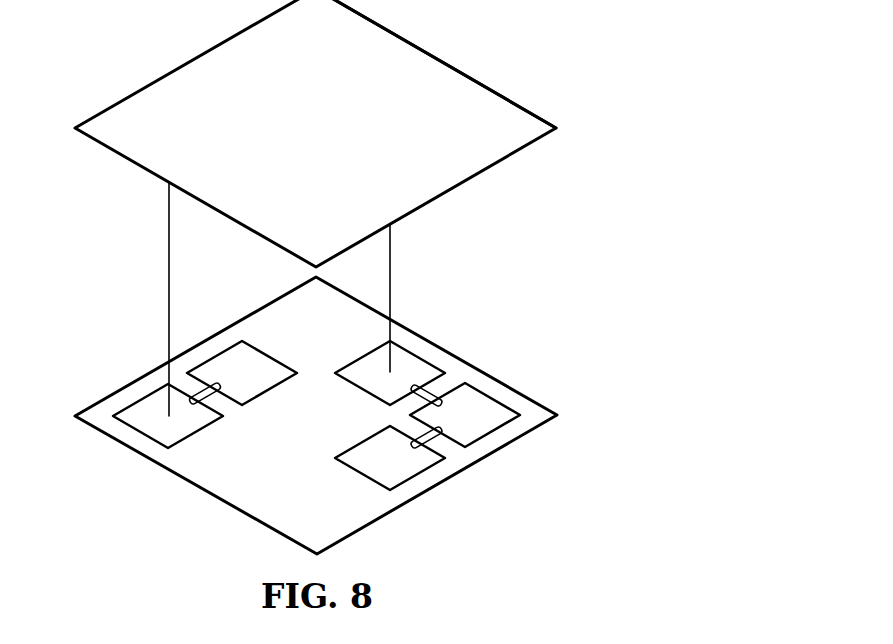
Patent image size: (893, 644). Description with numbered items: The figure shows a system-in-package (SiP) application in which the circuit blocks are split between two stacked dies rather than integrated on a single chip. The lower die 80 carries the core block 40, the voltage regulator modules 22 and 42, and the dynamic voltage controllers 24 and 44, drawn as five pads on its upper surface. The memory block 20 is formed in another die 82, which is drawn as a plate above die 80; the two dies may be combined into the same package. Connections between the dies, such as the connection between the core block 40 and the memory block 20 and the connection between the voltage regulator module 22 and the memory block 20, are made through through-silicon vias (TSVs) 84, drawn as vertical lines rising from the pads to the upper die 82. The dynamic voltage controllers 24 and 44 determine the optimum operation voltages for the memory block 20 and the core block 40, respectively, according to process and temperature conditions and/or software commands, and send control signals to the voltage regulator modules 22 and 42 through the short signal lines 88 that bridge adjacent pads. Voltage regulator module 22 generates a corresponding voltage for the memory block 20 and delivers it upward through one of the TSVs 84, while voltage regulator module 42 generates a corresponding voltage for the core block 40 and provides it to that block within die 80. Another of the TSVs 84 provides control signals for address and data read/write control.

The memory block 20 is at (199, 67).
The die 82 is at (438, 58).
The die 80 is at (420, 487).
The through-silicon vias 84 is at (265, 299).
The voltage regulator module 22 is at (142, 415).
The dynamic voltage controller 24 is at (258, 358).
The core block 40 is at (373, 357).
The voltage regulator module 42 is at (482, 403).
The dynamic voltage controller 44 is at (373, 442).
The signal lines 88 is at (210, 395).